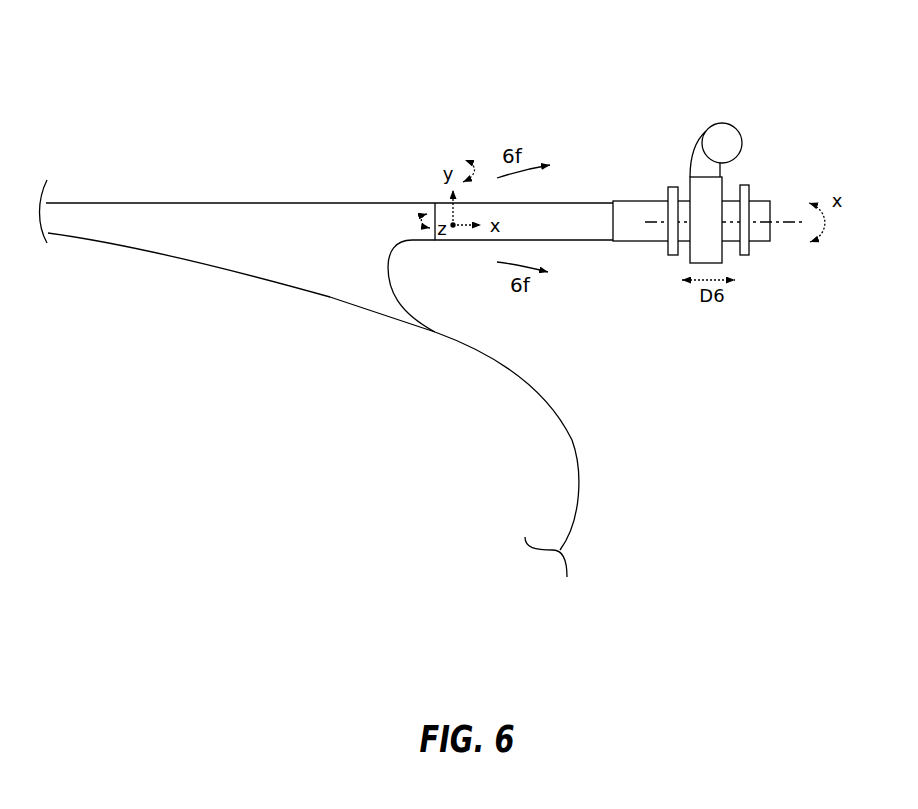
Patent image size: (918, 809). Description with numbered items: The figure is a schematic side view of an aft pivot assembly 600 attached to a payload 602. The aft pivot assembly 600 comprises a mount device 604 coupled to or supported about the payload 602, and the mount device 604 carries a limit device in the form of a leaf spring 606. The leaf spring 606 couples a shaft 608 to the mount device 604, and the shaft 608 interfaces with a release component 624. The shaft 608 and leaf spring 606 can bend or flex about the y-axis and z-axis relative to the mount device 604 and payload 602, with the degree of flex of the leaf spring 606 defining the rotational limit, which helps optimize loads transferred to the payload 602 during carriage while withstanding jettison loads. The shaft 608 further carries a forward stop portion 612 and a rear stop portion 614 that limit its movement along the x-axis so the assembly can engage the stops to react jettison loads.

The aft pivot assembly 600 is at (280, 50).
The payload 602 is at (577, 482).
The mount device 604 is at (230, 222).
The leaf spring 606 is at (563, 240).
The shaft 608 is at (622, 199).
The forward stop portion 612 is at (672, 257).
The rear stop portion 614 is at (753, 263).
The release component 624 is at (742, 168).